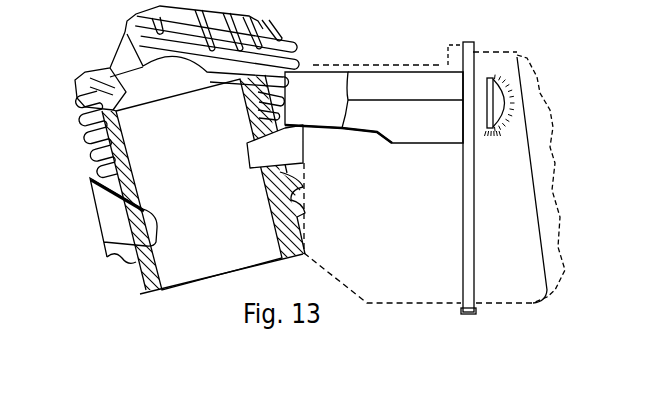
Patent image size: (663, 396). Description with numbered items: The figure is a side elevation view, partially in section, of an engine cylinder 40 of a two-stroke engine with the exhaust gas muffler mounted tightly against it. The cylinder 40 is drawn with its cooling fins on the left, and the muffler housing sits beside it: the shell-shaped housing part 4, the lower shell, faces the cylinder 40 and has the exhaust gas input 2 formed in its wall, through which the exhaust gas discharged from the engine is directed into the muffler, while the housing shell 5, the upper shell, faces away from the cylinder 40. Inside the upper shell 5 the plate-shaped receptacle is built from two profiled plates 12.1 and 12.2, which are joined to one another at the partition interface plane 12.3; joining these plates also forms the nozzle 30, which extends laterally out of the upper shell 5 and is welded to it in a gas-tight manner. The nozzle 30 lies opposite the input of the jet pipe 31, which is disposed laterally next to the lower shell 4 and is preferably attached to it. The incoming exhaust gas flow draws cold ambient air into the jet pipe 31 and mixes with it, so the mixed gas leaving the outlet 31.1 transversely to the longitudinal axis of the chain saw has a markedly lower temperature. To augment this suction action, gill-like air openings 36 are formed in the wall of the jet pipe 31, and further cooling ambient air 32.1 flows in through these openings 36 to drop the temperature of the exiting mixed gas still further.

The exhaust gas input 2 is at (305, 163).
The shell-shaped housing part 4 is at (401, 240).
The housing shell 5 is at (513, 236).
The profiled plate 12.1 is at (487, 133).
The profiled plate 12.2 is at (510, 123).
The partition interface plane 12.3 is at (495, 103).
The nozzle 30 is at (517, 57).
The jet pipe 31 is at (418, 144).
The outlet 31.1 is at (332, 112).
The cooling ambient air 32.1 is at (453, 62).
The gill-like air openings 36 is at (447, 65).
The engine cylinder 40 is at (226, 173).